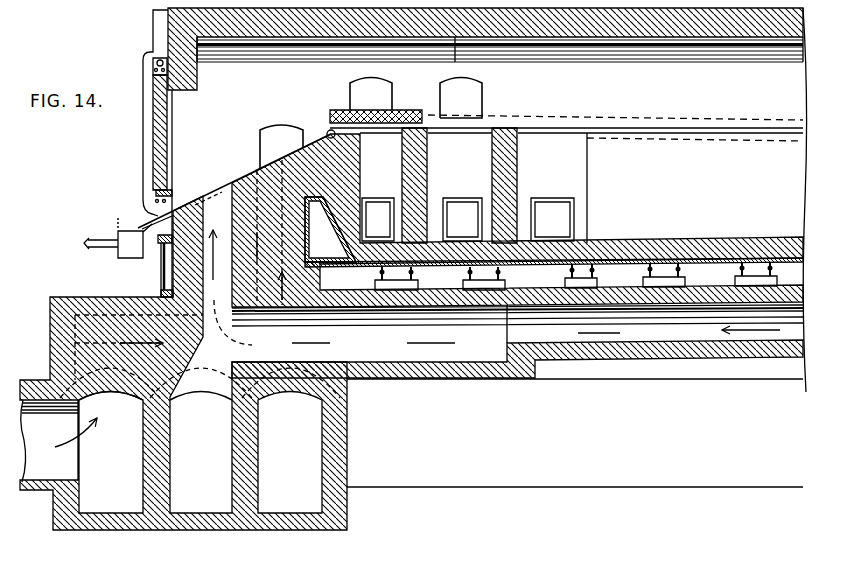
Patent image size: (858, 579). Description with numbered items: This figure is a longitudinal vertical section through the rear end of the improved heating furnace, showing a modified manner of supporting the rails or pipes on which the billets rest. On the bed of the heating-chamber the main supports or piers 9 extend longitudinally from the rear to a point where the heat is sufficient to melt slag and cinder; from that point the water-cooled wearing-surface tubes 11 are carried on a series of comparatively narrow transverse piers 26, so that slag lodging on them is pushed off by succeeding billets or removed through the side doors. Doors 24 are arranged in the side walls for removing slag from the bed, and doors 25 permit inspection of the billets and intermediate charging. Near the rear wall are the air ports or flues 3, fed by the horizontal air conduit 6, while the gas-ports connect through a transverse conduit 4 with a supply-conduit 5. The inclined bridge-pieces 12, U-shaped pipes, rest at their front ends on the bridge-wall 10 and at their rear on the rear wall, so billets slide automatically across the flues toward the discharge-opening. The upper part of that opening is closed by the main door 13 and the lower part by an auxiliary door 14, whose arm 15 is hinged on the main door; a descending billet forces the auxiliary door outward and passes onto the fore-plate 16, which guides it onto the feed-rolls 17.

The air ports or flues 3 is at (220, 255).
The transverse conduit 4 is at (111, 426).
The supply-conduit 5 is at (59, 441).
The horizontal conduit 6 is at (517, 330).
The main supports or piers 9 is at (627, 188).
The bridge-wall 10 is at (517, 220).
The wearing-surface 11 is at (651, 128).
The inclined supplemental supports or bridge-pieces 12 is at (220, 180).
The main door 13 is at (167, 112).
The auxiliary door 14 is at (174, 207).
The arm 15 is at (143, 142).
The fore-plate 16 is at (158, 221).
The feed-rolls 17 is at (136, 257).
The doors 24 is at (468, 219).
The doors 25 is at (445, 93).
The transverse piers 26 is at (402, 170).